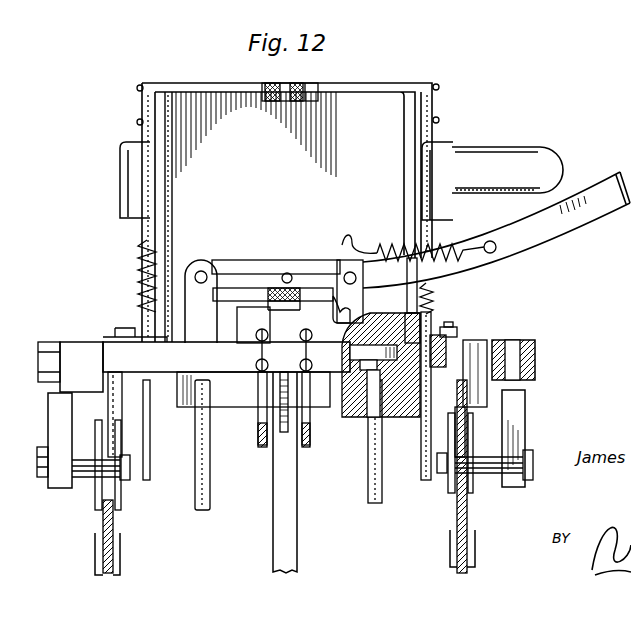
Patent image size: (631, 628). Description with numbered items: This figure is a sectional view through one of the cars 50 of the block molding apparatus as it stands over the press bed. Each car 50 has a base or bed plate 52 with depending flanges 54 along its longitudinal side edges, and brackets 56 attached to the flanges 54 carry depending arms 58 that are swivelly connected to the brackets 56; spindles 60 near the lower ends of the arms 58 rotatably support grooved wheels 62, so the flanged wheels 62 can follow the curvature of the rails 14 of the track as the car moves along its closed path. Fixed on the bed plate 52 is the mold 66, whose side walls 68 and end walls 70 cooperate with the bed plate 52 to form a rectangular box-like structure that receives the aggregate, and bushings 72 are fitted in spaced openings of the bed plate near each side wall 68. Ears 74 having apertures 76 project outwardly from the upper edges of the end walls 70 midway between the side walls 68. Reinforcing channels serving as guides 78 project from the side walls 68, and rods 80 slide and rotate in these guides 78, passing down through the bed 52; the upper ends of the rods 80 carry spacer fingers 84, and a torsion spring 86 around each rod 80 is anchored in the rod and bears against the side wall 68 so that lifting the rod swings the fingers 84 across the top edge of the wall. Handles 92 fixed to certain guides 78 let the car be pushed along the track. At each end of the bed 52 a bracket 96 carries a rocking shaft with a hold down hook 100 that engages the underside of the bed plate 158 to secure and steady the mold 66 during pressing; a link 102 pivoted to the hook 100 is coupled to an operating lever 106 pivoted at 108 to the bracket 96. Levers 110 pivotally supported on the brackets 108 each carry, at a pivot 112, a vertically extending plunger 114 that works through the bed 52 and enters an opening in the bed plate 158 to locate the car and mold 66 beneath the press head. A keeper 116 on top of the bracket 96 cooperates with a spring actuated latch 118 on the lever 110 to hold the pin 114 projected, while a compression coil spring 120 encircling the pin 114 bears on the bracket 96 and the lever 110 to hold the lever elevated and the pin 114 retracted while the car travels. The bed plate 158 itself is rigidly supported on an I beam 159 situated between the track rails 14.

The rails 14 is at (113, 523).
The car 50 is at (463, 330).
The base or bed plate 52 is at (228, 360).
The depending flanges 54 is at (110, 415).
The brackets 56 is at (90, 355).
The depending arms 58 is at (58, 492).
The spindles 60 is at (80, 478).
The grooved wheels 62 is at (112, 485).
The mold 66 is at (380, 108).
The side walls 68 is at (422, 135).
The end walls 70 is at (200, 100).
The bushing 72 is at (380, 347).
The ears 74 is at (300, 101).
The apertures 76 is at (256, 135).
The guides 78 is at (120, 170).
The rods 80 is at (160, 188).
The spacer fingers 84 is at (137, 120).
The torsion spring 86 is at (137, 272).
The handles 92 is at (522, 157).
The brackets 96 is at (250, 318).
The hold down hook 100 is at (262, 410).
The link 102 is at (293, 393).
The operating lever 106 is at (262, 448).
The pivot / brackets 108 is at (192, 293).
The levers 110 is at (312, 260).
The pivotal coupling 112 is at (286, 272).
The plunger 114 is at (291, 290).
The keeper 116 is at (332, 308).
The spring actuated latch 118 is at (366, 283).
The compression coil spring 120 is at (270, 300).
The bed plate 158 is at (187, 410).
The I beam 159 is at (297, 522).